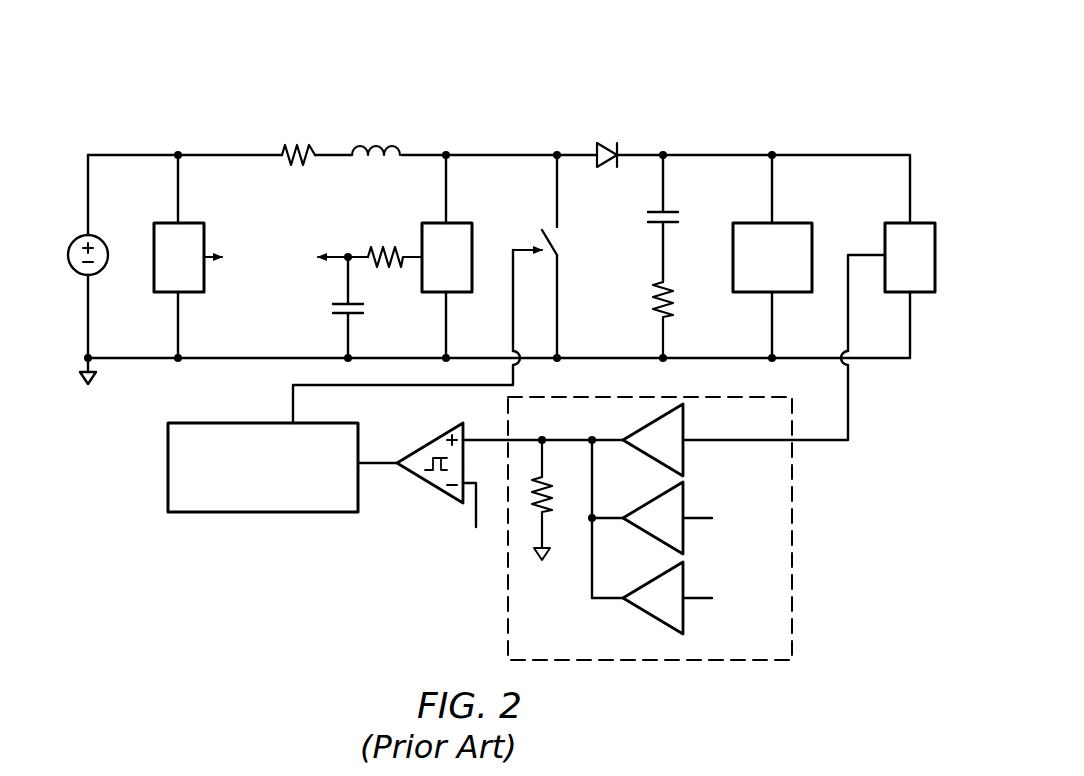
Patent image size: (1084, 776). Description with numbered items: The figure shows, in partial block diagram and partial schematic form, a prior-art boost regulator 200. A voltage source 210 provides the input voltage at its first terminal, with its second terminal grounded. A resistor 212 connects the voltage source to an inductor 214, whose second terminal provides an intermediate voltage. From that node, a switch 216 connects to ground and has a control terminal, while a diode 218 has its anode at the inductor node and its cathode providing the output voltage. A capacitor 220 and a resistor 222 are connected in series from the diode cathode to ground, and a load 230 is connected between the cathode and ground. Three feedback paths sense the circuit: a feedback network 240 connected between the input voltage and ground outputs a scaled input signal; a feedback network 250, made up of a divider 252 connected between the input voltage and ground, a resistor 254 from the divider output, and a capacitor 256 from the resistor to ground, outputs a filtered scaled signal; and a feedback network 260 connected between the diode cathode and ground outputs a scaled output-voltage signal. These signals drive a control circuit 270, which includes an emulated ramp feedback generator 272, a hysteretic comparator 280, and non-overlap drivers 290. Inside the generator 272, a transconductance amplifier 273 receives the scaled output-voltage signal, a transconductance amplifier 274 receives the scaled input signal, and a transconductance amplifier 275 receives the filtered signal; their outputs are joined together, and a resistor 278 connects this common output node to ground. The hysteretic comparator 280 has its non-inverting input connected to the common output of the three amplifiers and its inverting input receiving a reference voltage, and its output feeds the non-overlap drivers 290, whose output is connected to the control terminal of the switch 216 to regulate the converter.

The boost regulator 200 is at (148, 57).
The voltage source 210 is at (99, 235).
The resistor 212 is at (292, 150).
The inductor 214 is at (372, 152).
The switch 216 is at (565, 243).
The diode 218 is at (620, 150).
The capacitor 220 is at (672, 214).
The resistor 222 is at (673, 300).
The load 230 is at (783, 296).
The feedback network 240 is at (190, 222).
The feedback network 250 is at (323, 210).
The divider 252 is at (460, 222).
The resistor 254 is at (384, 250).
The capacitor 256 is at (352, 315).
The feedback network 260 is at (893, 221).
The control circuit 270 is at (162, 553).
The emulated ramp feedback (ERF) generator 272 is at (796, 520).
The transconductance amplifier 273 is at (687, 455).
The transconductance amplifier 274 is at (687, 535).
The transconductance amplifier 275 is at (687, 615).
The resistor 278 is at (550, 518).
The hysteretic comparator 280 is at (440, 432).
The non-overlap drivers 290 is at (215, 422).